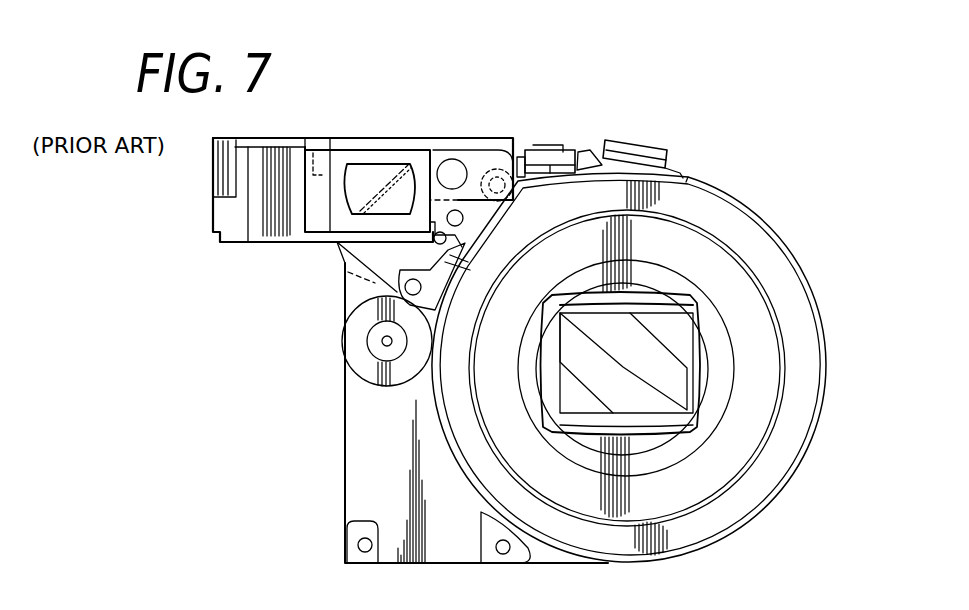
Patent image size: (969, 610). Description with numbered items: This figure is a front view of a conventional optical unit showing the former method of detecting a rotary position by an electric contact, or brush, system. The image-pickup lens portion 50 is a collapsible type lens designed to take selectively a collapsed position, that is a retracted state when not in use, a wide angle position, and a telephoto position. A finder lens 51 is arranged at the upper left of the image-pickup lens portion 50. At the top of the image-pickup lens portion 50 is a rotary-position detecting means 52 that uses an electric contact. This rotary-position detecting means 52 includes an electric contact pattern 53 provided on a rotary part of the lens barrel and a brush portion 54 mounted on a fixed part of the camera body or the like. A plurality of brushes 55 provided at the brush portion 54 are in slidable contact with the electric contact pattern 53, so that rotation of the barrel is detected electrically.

The image-pickup lens portion 50 is at (769, 216).
The finder lens 51 is at (377, 177).
The rotary-position detecting means 52 is at (627, 134).
The electric contact pattern 53 is at (680, 176).
The brush portion 54 is at (545, 158).
The brushes 55 is at (588, 150).